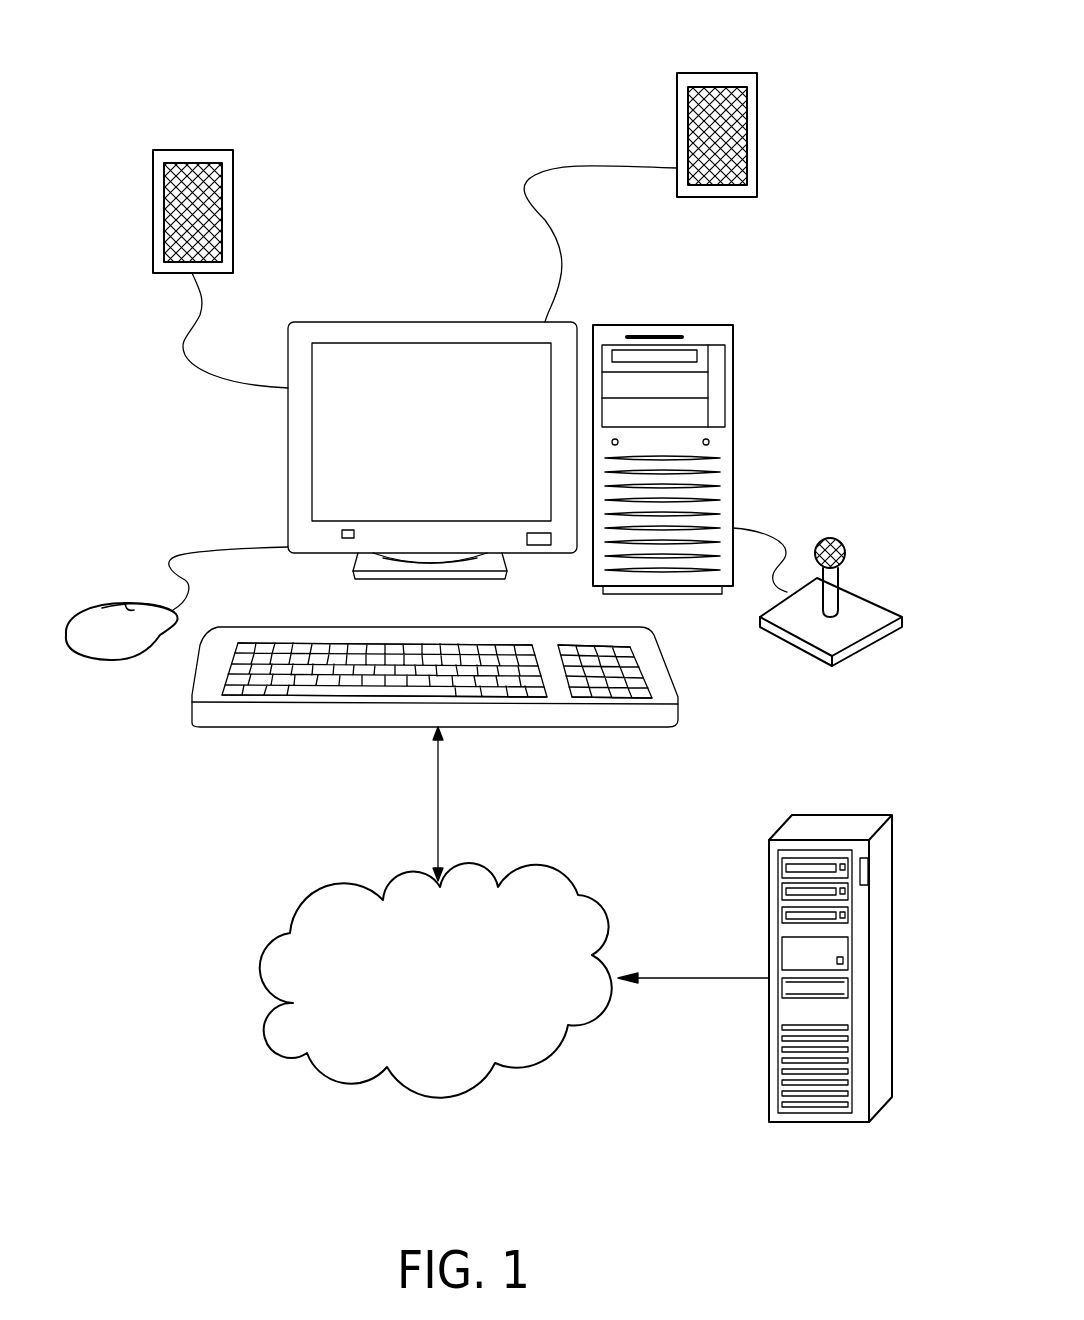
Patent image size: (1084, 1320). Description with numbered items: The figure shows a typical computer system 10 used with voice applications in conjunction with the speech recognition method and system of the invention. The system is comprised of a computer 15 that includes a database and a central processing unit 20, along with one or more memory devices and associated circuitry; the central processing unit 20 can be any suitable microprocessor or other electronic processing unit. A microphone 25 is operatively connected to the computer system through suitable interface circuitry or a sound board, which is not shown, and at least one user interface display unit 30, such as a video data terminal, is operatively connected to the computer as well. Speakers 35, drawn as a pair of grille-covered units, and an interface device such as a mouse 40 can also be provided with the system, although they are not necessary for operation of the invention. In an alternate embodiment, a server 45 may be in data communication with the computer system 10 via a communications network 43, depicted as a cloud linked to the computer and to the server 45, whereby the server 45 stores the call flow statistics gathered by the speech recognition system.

The computer system 10 is at (808, 210).
The computer 15 is at (617, 308).
The central processing unit 20 is at (735, 422).
The microphone 25 is at (863, 645).
The user interface display unit 30 is at (408, 318).
The speakers 35 is at (205, 150).
The mouse 40 is at (95, 605).
The communications network 43 is at (600, 910).
The server 45 is at (853, 822).